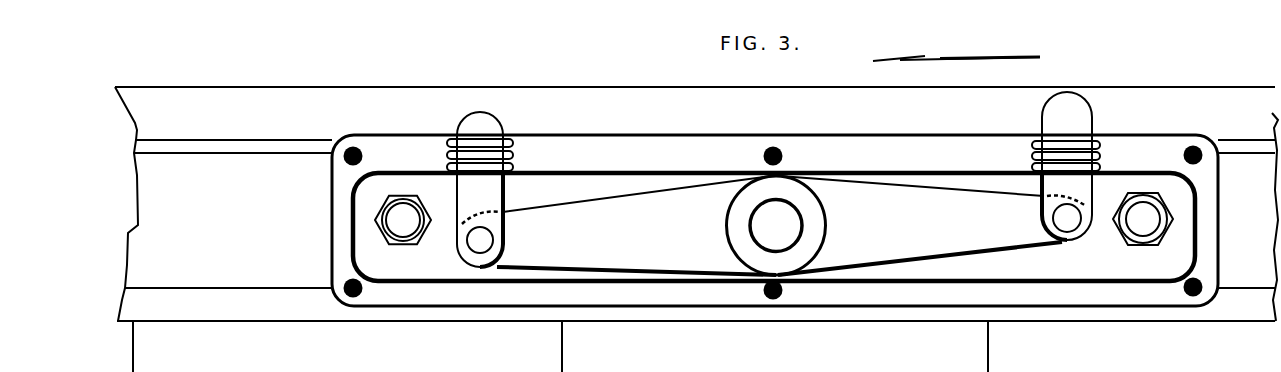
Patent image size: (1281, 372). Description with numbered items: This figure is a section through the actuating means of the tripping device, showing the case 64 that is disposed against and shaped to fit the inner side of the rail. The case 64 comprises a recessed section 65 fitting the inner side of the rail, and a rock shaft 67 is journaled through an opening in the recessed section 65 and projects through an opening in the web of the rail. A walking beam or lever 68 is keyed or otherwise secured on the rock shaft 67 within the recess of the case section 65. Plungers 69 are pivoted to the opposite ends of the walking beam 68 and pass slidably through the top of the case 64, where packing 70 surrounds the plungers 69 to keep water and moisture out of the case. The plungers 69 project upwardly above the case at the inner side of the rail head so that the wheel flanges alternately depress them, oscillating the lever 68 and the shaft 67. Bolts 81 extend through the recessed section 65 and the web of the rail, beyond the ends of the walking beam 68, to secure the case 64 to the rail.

The case 64 is at (433, 307).
The recessed section 65 is at (530, 290).
The rock shaft 67 is at (785, 223).
The walking beam 68 is at (774, 225).
The plunger 69 is at (480, 127).
The packing 70 is at (510, 157).
The bolt 81 is at (395, 217).